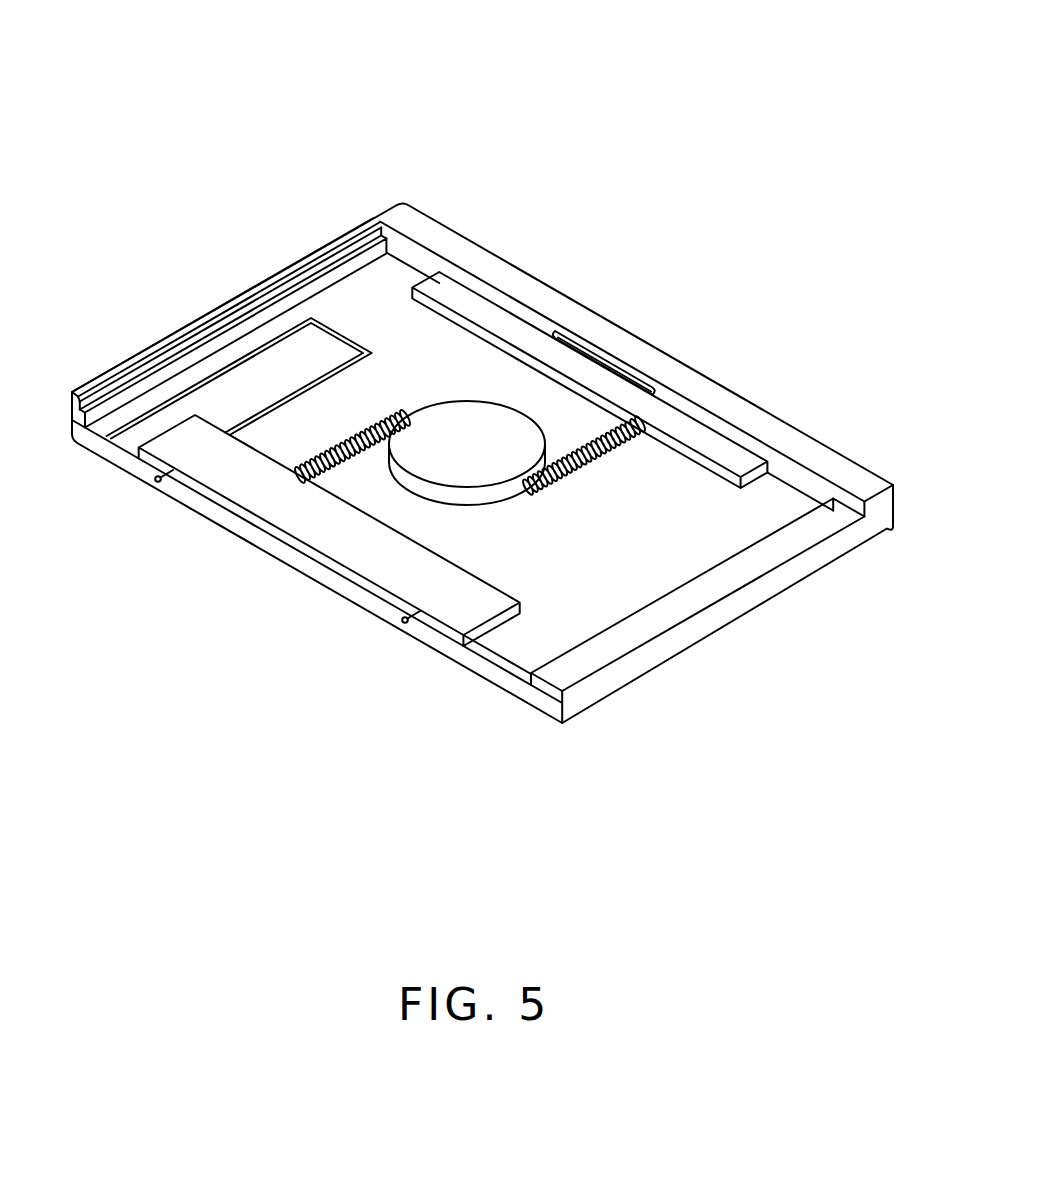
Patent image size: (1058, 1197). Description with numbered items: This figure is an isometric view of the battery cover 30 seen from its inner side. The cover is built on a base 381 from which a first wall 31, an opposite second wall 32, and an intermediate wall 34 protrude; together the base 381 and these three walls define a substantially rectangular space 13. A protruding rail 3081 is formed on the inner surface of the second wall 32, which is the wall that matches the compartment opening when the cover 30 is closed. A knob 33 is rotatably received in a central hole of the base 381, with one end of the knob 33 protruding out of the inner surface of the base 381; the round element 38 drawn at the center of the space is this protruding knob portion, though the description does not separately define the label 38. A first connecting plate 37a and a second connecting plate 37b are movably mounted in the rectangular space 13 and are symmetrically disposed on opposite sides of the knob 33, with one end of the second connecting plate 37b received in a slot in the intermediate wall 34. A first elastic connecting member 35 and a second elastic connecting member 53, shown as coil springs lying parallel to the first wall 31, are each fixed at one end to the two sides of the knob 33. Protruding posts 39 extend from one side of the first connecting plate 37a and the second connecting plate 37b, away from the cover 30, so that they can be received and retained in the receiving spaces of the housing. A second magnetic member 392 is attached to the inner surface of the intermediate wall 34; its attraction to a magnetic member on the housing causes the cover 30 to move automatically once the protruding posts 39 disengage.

The battery cover 30 is at (625, 80).
The first wall 31 is at (708, 645).
The second wall 32 is at (357, 223).
The protruding rail 3081 is at (99, 397).
The intermediate wall 34 is at (442, 223).
The second magnetic member 392 is at (572, 345).
The first connecting plate 37a is at (285, 505).
The second connecting plate 37b is at (608, 387).
The knob 33 is at (412, 493).
The lens 38 is at (472, 435).
The first elastic connecting member 35 is at (290, 462).
The second elastic connecting member 53 is at (632, 418).
The protruding posts 39 is at (158, 478).
The base 381 is at (498, 672).
The rectangular space 13 is at (585, 565).